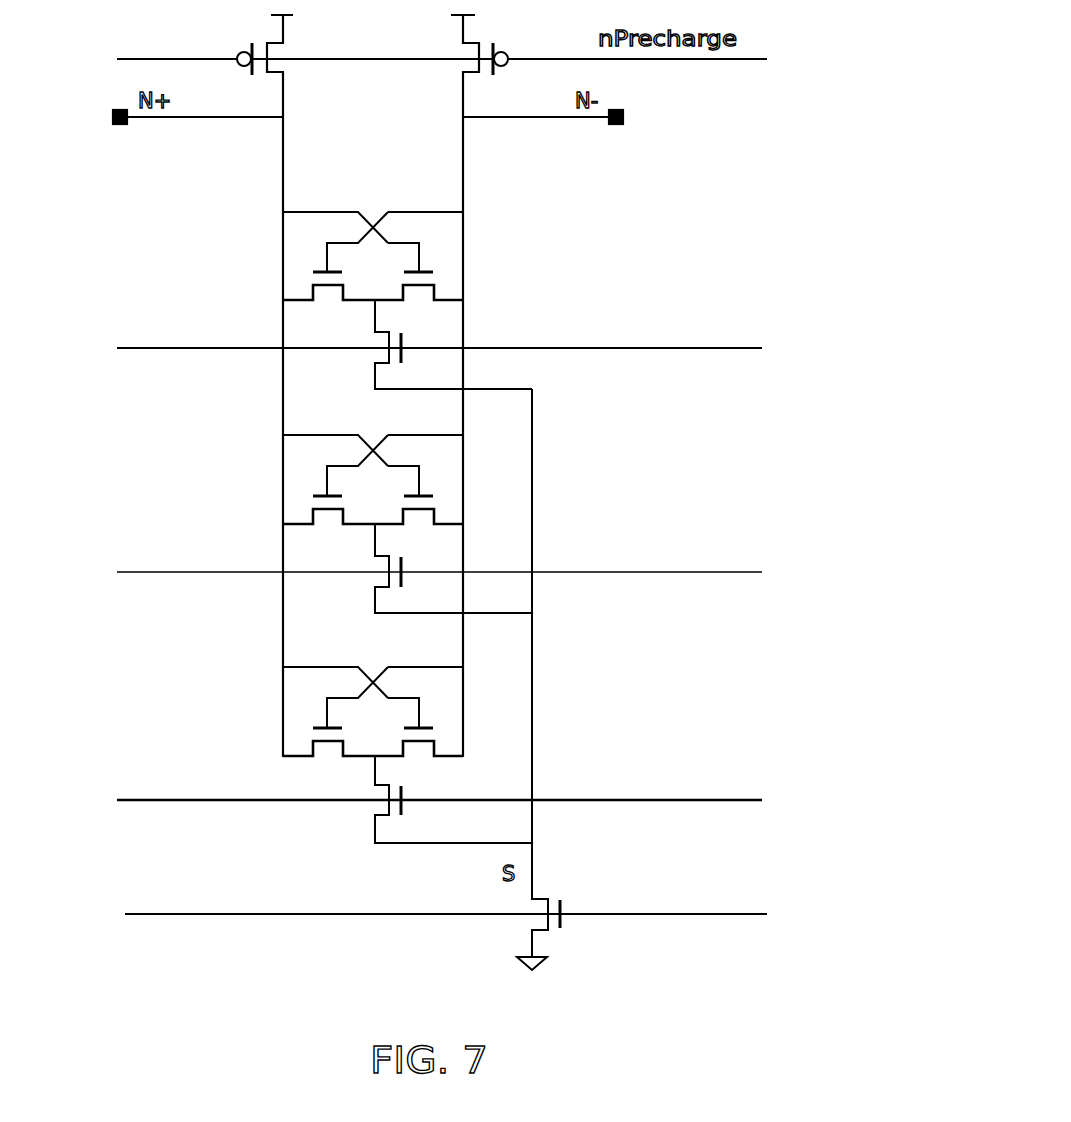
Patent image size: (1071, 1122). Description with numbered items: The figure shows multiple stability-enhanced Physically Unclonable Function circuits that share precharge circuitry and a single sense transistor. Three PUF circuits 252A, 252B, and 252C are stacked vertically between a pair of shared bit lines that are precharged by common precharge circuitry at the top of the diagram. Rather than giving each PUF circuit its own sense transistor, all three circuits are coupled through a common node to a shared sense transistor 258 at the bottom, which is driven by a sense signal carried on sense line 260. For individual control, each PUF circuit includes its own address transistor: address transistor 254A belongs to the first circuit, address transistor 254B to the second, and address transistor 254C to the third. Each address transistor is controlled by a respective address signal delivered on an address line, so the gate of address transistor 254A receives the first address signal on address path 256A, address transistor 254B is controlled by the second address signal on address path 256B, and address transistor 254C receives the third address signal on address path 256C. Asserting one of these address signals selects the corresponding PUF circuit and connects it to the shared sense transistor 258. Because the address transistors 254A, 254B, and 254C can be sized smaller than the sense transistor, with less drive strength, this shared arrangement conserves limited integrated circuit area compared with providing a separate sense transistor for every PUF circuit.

The PUF circuit 252A is at (478, 213).
The PUF circuit 252B is at (258, 423).
The PUF circuit 252C is at (258, 655).
The address transistor 254A is at (378, 339).
The address transistor 254B is at (379, 566).
The address transistor 254C is at (378, 808).
The address path 256A is at (697, 349).
The address path 256B is at (697, 573).
The address path 256C is at (698, 801).
The sense transistor 258 is at (555, 933).
The sense line 260 is at (698, 915).